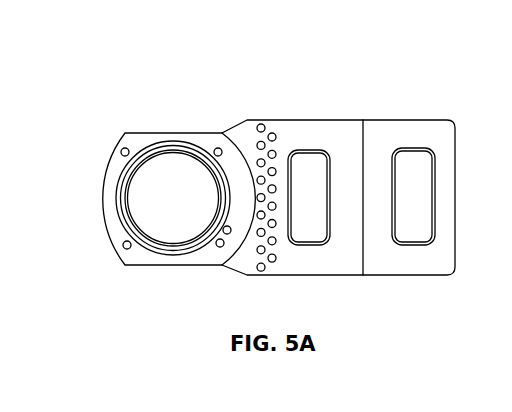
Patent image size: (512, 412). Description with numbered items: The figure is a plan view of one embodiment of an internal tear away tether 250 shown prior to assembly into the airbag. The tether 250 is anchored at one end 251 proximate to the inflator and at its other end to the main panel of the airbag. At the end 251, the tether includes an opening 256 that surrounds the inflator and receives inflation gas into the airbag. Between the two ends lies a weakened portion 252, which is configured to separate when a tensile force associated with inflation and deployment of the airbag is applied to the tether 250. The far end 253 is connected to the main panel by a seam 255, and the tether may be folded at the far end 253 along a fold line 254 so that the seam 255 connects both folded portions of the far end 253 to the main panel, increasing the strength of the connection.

The tear away tether 250 is at (84, 249).
The end 251 is at (204, 138).
The weakened portion 252 is at (270, 225).
The far end 253 is at (396, 267).
The fold line 254 is at (363, 128).
The seam 255 is at (415, 148).
The opening 256 is at (160, 222).